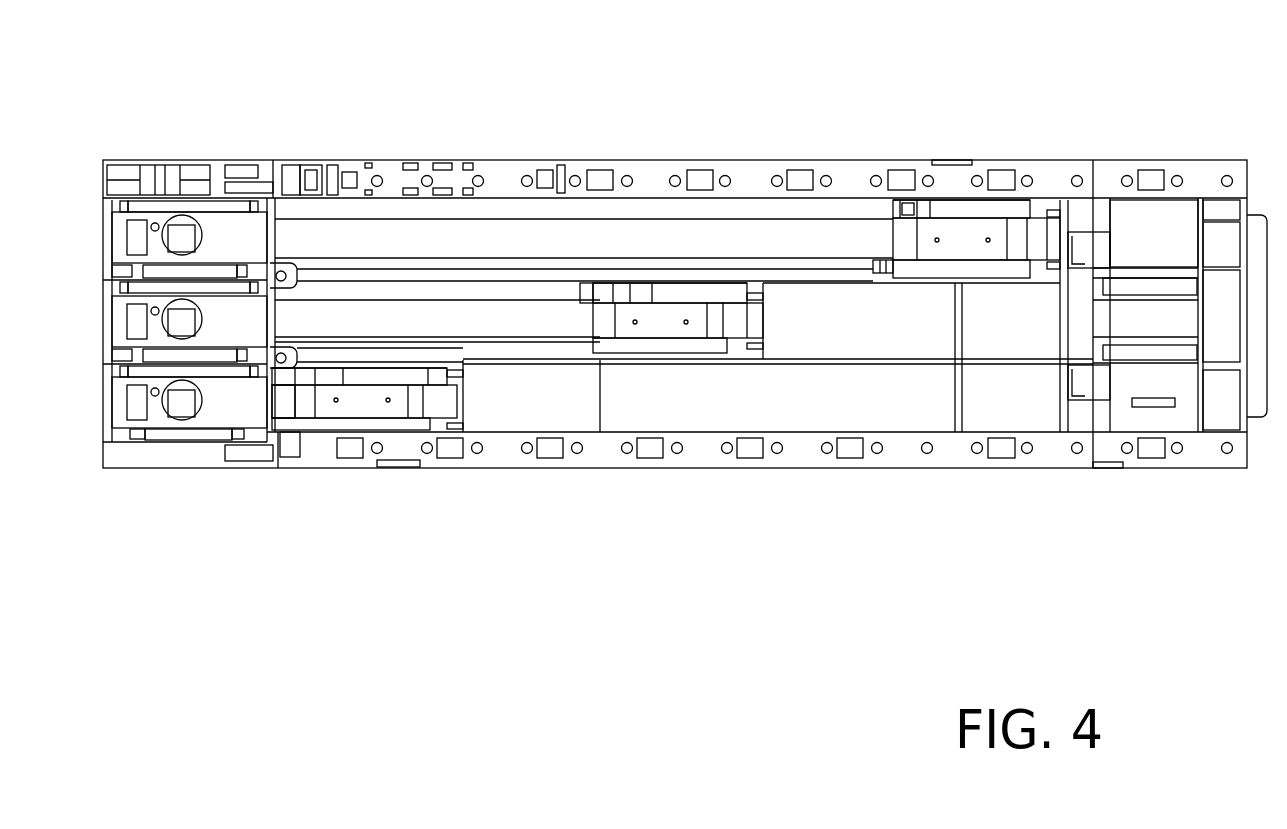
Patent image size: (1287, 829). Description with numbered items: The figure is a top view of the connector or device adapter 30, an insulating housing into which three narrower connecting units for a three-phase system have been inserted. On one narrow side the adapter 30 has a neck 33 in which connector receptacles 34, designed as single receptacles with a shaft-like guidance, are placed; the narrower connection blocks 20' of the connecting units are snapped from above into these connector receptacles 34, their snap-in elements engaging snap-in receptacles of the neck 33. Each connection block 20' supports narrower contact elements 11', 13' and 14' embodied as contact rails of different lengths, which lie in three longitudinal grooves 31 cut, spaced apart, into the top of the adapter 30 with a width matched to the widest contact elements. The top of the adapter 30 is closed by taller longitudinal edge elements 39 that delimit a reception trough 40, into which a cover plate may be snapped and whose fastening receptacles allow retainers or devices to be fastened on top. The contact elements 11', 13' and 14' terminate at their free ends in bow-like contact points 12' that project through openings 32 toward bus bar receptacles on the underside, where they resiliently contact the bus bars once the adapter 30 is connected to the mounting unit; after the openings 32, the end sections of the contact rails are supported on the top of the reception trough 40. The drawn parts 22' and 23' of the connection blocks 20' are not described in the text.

The contact element 11' is at (581, 190).
The contact point 12' is at (666, 305).
The contact element 13' is at (398, 428).
The contact element 14' is at (283, 468).
The connection block 20' is at (157, 365).
The motor 22' is at (175, 470).
The connector 23' is at (135, 458).
The connector or device adapter 30 is at (602, 445).
The longitudinal groove 31 is at (492, 292).
The opening 32 is at (388, 372).
The neck 33 is at (172, 158).
The connector receptacle 34 is at (228, 205).
The longitudinal edge element 39 is at (860, 177).
The reception trough 40 is at (855, 207).